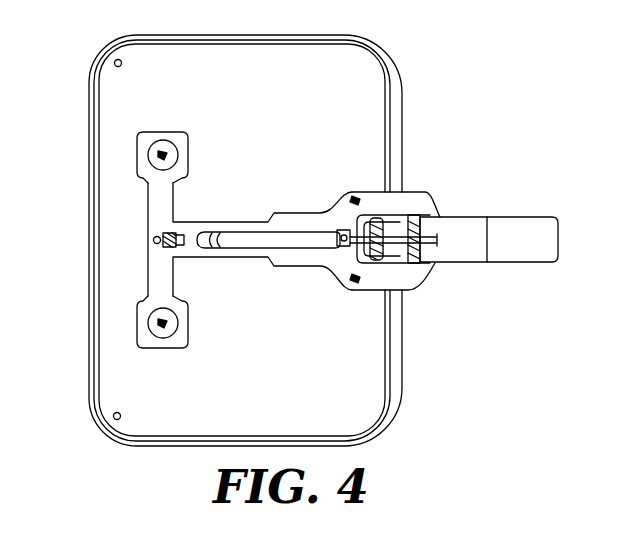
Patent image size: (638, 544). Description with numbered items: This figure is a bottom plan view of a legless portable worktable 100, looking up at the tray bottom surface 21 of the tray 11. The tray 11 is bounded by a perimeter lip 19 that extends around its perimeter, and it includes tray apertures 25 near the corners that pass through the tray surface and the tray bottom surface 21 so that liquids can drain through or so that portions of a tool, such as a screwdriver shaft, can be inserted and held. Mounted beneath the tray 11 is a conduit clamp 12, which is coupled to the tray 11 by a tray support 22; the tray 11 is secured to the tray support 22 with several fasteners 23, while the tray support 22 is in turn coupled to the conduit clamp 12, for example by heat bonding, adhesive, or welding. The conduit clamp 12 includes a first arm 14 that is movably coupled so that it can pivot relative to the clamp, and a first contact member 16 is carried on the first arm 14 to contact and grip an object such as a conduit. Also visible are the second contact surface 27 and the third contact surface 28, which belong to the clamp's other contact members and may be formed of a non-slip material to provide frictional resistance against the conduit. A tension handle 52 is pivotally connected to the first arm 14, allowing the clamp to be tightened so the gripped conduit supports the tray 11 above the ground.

The legless portable worktable 100 is at (529, 39).
The tray 11 is at (125, 219).
The conduit clamp 12 is at (482, 304).
The first arm 14 is at (395, 243).
The first contact member 16 is at (458, 250).
The perimeter lip 19 is at (395, 405).
The tray bottom surface 21 is at (334, 104).
The tray support 22 is at (283, 224).
The fasteners 23 is at (167, 153).
The tray apertures 25 is at (114, 63).
The second contact surface 27 is at (536, 245).
The third contact surface 28 is at (400, 232).
The tension handle 52 is at (252, 242).